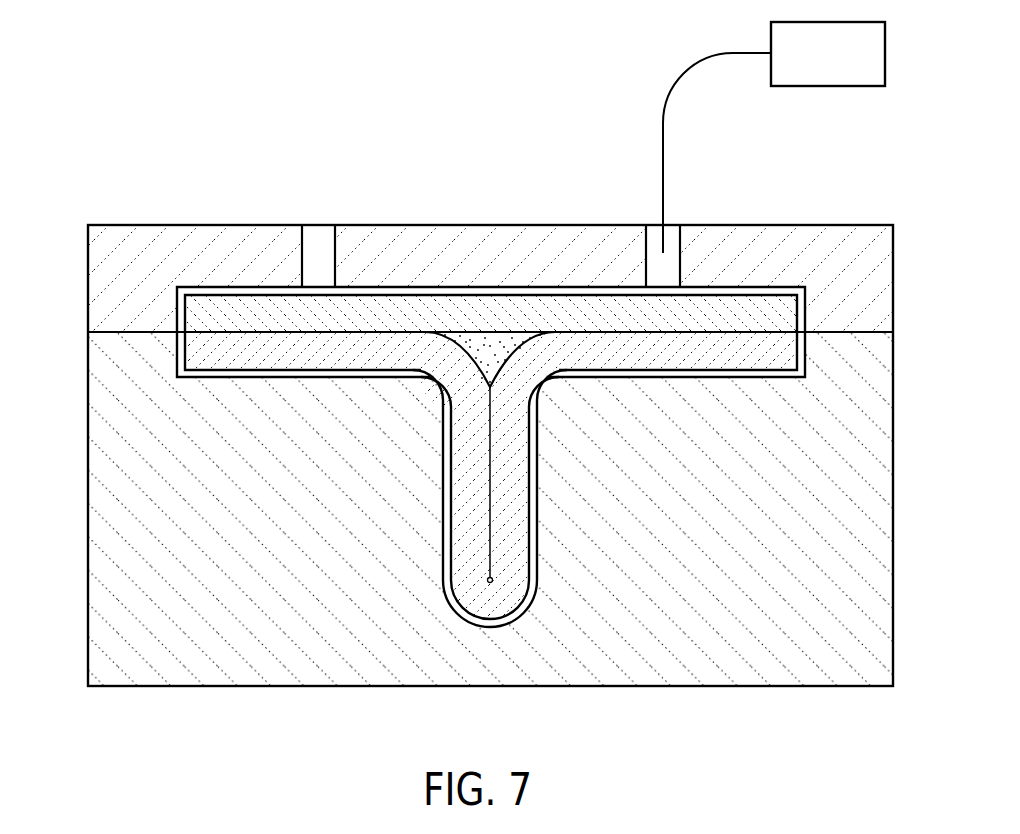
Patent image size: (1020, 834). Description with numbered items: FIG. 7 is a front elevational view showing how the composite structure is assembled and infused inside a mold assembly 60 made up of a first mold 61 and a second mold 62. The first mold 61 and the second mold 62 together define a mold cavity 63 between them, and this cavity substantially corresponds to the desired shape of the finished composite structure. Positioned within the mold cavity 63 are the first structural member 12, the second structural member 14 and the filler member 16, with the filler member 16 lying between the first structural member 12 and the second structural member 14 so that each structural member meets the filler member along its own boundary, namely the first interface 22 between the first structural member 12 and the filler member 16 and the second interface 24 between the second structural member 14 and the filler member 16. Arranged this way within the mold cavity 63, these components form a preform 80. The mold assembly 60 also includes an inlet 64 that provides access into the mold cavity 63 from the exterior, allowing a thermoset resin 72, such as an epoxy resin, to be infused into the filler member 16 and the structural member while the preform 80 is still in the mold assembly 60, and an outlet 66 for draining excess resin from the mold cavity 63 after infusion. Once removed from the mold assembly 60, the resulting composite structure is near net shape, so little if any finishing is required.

The first structural member 12 is at (511, 500).
The second structural member 14 is at (407, 305).
The filler member 16 is at (491, 351).
The first interface 22 is at (457, 347).
The second interface 24 is at (541, 333).
The mold assembly 60 is at (894, 250).
The first mold 61 is at (106, 569).
The second mold 62 is at (105, 280).
The mold cavity 63 is at (810, 380).
The inlet 64 is at (668, 253).
The outlet 66 is at (323, 245).
The thermoset resin 72 is at (774, 137).
The preform 80 is at (752, 326).